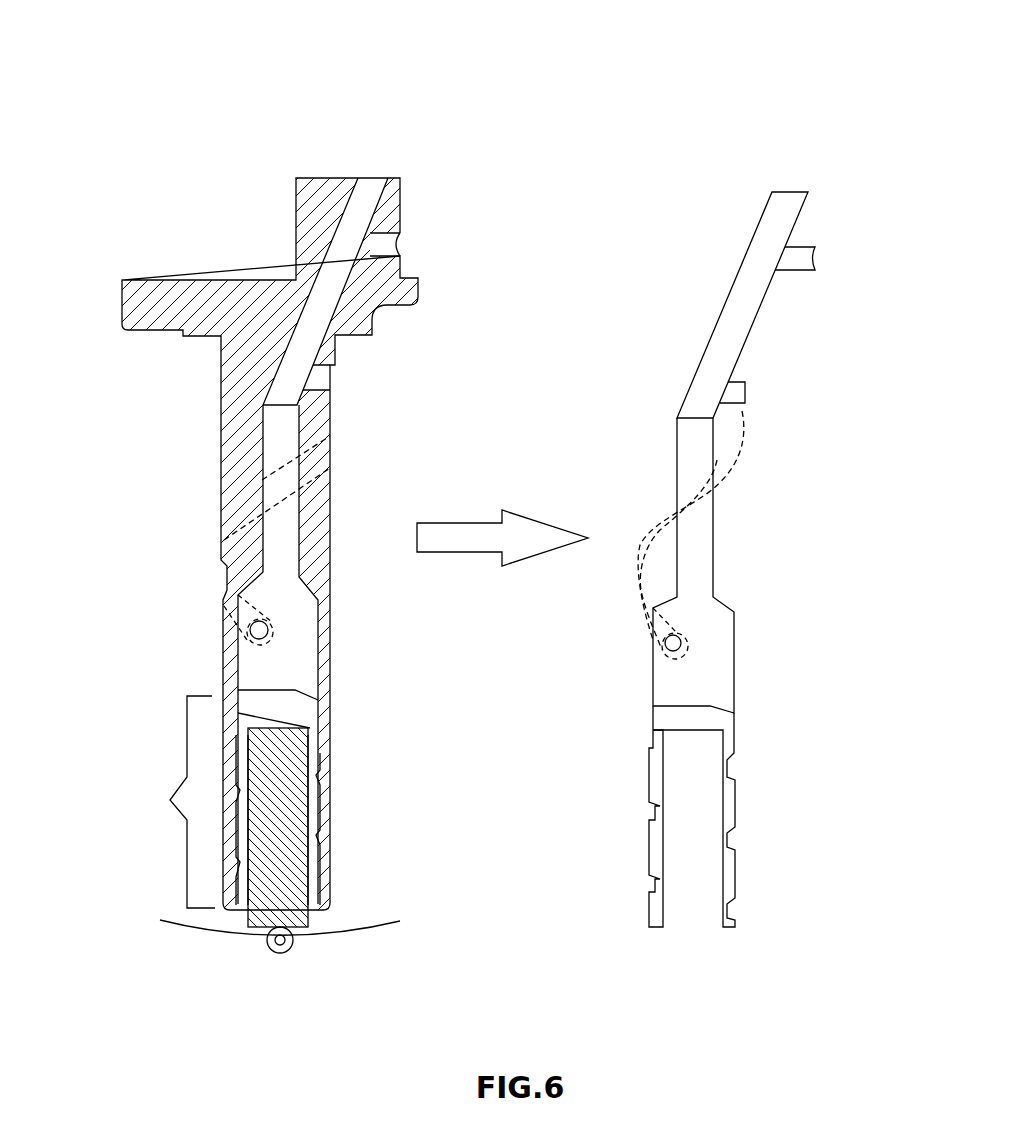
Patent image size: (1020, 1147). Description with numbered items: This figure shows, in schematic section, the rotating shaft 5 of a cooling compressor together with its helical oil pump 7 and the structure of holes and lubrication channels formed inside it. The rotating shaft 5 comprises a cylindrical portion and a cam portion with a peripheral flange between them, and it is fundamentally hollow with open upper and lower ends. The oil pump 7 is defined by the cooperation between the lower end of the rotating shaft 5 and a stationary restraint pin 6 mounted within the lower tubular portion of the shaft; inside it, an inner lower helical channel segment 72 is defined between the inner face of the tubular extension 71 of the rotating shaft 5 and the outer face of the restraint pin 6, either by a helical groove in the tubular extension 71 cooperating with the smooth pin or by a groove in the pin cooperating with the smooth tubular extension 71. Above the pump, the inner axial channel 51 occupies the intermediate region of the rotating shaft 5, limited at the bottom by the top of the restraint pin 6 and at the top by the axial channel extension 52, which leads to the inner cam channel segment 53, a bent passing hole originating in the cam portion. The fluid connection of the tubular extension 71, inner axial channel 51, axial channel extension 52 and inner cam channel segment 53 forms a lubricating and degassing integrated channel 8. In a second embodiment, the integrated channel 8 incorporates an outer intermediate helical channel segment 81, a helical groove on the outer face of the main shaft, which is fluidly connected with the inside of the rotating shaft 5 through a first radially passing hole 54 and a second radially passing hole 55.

The rotating shaft 5 is at (152, 157).
The inner axial channel 51 is at (297, 667).
The axial channel extension 52 is at (275, 440).
The inner cam channel segment 53 is at (363, 193).
The first radially passing hole 54 is at (258, 630).
The second radially passing hole 55 is at (318, 379).
The restraint pin 6 is at (290, 813).
The oil pump 7 is at (275, 824).
The tubular extension 71 is at (315, 752).
The inner lower helical channel segment 72 is at (313, 793).
The lubricating and degassing integrated channel 8 is at (717, 635).
The outer intermediate helical channel segment 81 is at (660, 528).